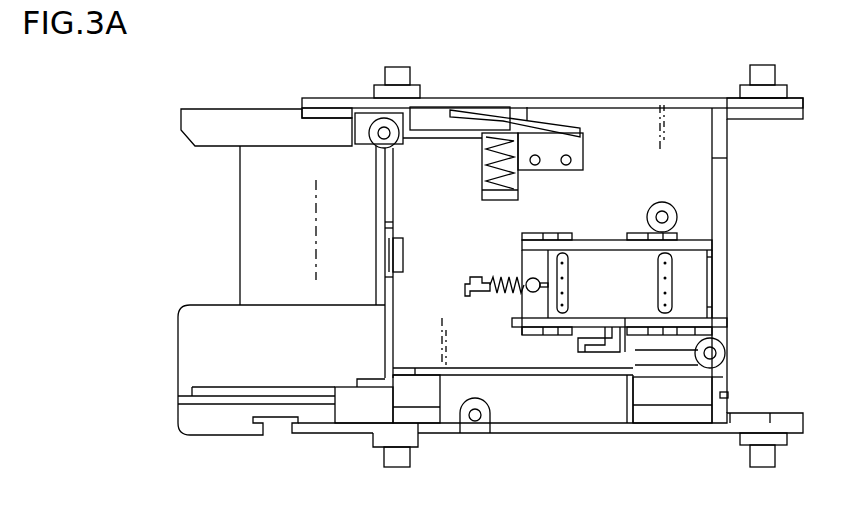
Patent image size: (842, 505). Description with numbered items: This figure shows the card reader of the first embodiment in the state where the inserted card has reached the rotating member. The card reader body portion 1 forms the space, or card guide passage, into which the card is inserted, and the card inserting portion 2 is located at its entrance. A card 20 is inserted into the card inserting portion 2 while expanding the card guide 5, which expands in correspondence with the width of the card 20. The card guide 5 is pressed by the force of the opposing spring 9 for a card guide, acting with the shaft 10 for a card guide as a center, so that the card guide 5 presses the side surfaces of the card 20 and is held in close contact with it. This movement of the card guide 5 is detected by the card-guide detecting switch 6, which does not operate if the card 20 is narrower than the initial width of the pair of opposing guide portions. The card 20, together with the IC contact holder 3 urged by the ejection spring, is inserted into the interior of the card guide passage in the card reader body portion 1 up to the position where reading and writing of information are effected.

The card reader body portion 1 is at (630, 125).
The card inserting portion 2 is at (190, 355).
The IC contact holder 3 is at (688, 283).
The card guide 5 is at (247, 118).
The card-guide detecting switch 6 is at (548, 145).
The spring for a card guide 9 is at (512, 133).
The shaft for a card guide 10 is at (384, 130).
The card 20 is at (245, 228).